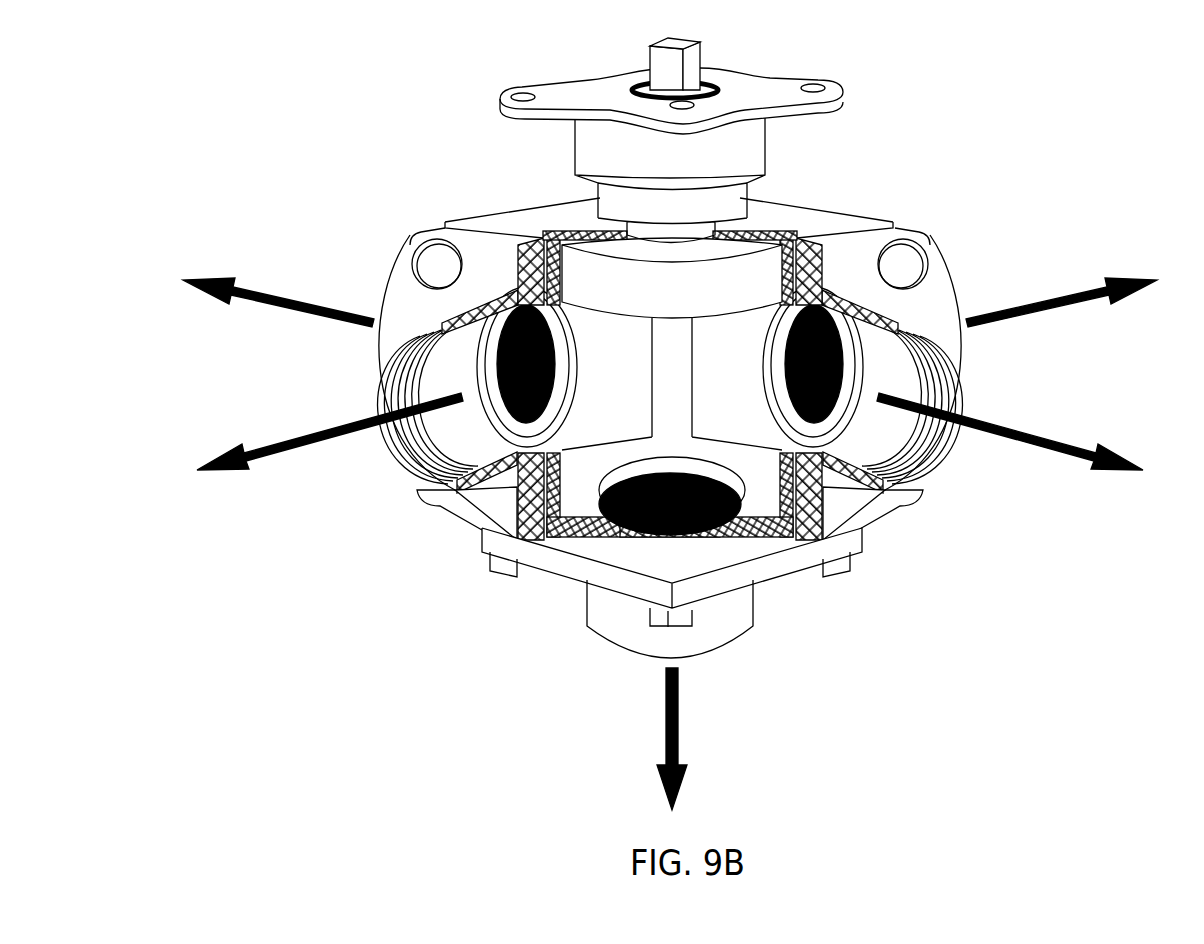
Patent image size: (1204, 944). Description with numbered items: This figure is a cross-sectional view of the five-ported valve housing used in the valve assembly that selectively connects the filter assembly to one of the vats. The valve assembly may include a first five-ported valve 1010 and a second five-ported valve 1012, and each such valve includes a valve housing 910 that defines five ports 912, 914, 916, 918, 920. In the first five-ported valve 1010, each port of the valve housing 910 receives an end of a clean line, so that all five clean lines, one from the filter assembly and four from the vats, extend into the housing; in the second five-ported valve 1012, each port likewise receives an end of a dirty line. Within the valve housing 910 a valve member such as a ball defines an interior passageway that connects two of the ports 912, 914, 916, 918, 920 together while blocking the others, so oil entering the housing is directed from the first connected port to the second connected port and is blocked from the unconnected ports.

The valve housing 910 is at (818, 214).
The port 912 is at (640, 527).
The port 914 is at (913, 443).
The port 916 is at (828, 317).
The port 918 is at (517, 312).
The port 920 is at (477, 443).
The first five-ported valve 1010 is at (684, 424).
The second five-ported valve 1012 is at (1052, 143).